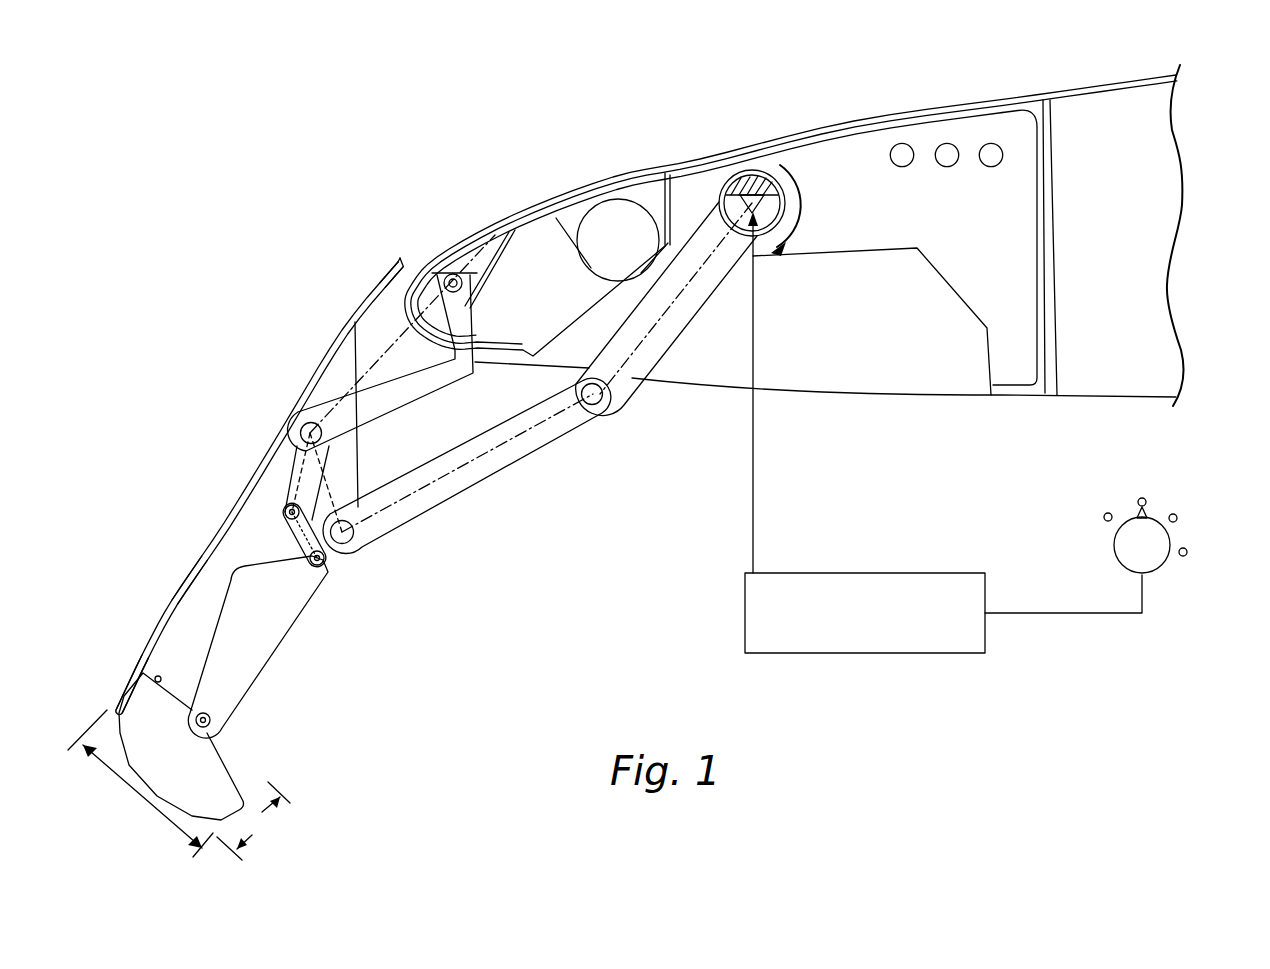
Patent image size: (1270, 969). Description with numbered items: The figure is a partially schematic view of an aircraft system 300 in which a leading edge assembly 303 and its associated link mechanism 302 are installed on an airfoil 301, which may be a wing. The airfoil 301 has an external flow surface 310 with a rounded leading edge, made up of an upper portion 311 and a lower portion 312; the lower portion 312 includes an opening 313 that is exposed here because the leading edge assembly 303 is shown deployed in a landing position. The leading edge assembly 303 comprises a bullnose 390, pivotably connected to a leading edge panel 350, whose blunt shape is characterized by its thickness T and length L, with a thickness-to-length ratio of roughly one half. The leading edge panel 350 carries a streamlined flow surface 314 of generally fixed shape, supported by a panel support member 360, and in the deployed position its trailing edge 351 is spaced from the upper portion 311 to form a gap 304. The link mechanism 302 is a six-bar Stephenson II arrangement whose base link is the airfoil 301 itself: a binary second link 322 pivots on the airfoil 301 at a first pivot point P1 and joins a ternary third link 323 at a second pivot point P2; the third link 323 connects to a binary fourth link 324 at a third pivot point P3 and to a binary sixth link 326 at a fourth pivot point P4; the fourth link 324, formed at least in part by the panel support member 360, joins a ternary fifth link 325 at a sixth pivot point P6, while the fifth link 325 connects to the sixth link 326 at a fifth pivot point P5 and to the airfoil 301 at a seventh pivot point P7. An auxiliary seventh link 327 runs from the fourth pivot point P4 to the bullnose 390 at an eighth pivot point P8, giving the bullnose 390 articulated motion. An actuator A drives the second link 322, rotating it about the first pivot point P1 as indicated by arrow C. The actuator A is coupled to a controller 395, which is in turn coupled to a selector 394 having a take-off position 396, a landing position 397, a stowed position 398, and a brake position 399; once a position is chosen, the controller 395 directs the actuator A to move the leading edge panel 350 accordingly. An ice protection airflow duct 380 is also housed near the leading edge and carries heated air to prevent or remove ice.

The aircraft system 300 is at (189, 207).
The airfoil 301 is at (1020, 188).
The link mechanism 302 is at (433, 662).
The leading edge assembly 303 is at (183, 478).
The gap 304 is at (414, 256).
The external flow surface 310 is at (802, 113).
The upper portion 311 is at (932, 104).
The lower portion 312 is at (1010, 402).
The opening 313 is at (860, 377).
The streamlined flow surface 314 is at (265, 450).
The second link 322 is at (676, 333).
The third link 323 is at (468, 505).
The fourth link 324 is at (362, 470).
The fifth link 325 is at (300, 412).
The sixth link 326 is at (283, 518).
The seventh link 327 is at (270, 625).
The leading edge panel 350 is at (170, 583).
The trailing edge 351 is at (396, 260).
The panel support member 360 is at (173, 641).
The ice protection airflow duct 380 is at (607, 226).
The bullnose 390 is at (215, 770).
The selector 394 is at (1160, 564).
The controller 395 is at (897, 573).
The take-off position 396 is at (1105, 521).
The landing position 397 is at (1142, 497).
The stowed position 398 is at (1178, 516).
The brake position 399 is at (1188, 554).
The actuator A is at (712, 193).
The arrow C is at (801, 185).
The first pivot point P1 is at (760, 212).
The second pivot point P2 is at (597, 405).
The third pivot point P3 is at (354, 537).
The fourth pivot point P4 is at (321, 568).
The fifth pivot point P5 is at (285, 507).
The sixth pivot point P6 is at (325, 436).
The seventh pivot point P7 is at (454, 273).
The eighth pivot point P8 is at (211, 722).
The length L is at (140, 783).
The thickness T is at (253, 821).